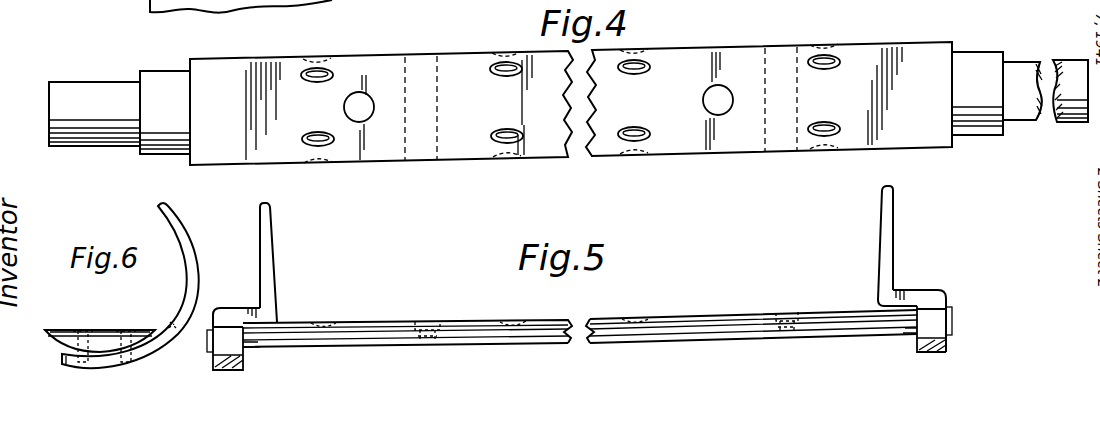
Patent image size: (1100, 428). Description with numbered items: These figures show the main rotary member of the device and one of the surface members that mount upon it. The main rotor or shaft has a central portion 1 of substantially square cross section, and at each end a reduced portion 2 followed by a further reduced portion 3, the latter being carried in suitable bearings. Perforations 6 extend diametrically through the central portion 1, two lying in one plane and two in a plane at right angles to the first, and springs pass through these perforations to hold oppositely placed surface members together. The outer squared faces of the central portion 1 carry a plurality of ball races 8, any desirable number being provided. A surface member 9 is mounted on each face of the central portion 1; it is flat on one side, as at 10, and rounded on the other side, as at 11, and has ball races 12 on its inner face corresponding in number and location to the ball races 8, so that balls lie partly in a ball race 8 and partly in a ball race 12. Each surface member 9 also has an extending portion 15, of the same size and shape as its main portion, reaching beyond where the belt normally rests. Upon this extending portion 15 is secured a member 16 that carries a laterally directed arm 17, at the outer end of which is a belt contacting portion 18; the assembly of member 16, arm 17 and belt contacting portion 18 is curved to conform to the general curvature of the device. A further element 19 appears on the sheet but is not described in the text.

In FIG. 4, the central portion 1 is at (284, 78).
In FIG. 4, the reduced portion 2 is at (152, 80).
In FIG. 4, the further reduced portion 3 is at (84, 97).
In FIG. 4, the perforation 6 is at (437, 57).
In FIG. 4, the ball race 8 is at (319, 59).
In FIG. 5, the surface member 9 is at (388, 322).
In FIG. 6, the surface member 9 is at (106, 340).
In FIG. 5, the flat side 10 is at (734, 314).
In FIG. 6, the flat side 10 is at (80, 330).
In FIG. 5, the rounded side 11 is at (500, 346).
In FIG. 6, the rounded side 11 is at (57, 343).
In FIG. 5, the ball race 12 is at (323, 323).
In FIG. 6, the ball race 12 is at (72, 331).
In FIG. 5, the extending portion 15 is at (252, 347).
In FIG. 5, the member 16 is at (213, 358).
In FIG. 6, the member 16 is at (112, 368).
In FIG. 5, the laterally directed arm 17 is at (258, 308).
In FIG. 6, the laterally directed arm 17 is at (176, 322).
In FIG. 5, the belt contacting portion 18 is at (270, 262).
In FIG. 6, the belt contacting portion 18 is at (178, 232).
In FIG. 4, the cover 19 is at (386, 0).